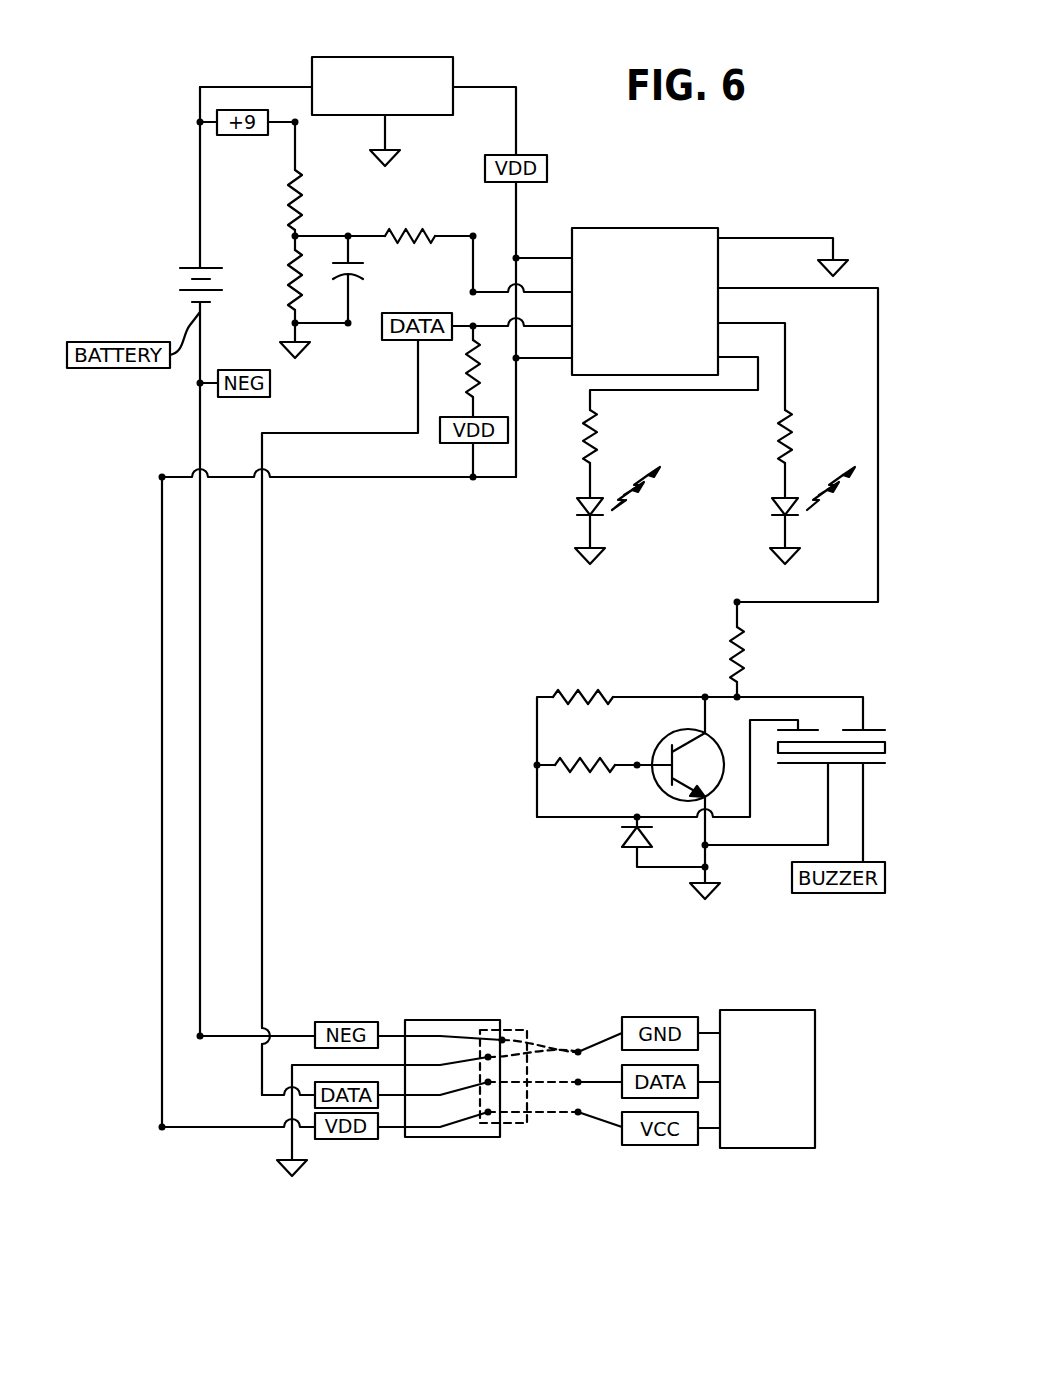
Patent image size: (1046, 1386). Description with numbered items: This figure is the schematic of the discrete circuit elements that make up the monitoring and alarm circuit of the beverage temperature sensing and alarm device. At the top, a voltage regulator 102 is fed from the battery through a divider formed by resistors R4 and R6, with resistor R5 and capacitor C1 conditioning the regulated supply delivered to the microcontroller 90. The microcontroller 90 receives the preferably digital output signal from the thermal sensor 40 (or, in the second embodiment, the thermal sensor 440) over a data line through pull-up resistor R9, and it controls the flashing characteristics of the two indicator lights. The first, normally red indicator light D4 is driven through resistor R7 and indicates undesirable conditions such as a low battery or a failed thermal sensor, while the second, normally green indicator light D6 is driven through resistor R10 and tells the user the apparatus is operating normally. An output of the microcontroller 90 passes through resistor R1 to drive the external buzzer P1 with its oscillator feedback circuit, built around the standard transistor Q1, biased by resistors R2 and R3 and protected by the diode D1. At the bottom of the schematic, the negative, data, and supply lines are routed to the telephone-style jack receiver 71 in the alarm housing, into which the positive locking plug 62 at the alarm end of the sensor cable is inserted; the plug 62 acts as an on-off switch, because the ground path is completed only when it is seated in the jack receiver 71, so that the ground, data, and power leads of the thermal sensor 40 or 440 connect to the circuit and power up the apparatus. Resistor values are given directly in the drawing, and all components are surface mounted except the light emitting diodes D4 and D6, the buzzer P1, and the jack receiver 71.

The voltage regulator 102 is at (418, 57).
The microcontroller 90 is at (645, 228).
The RJ-11 jack receiver 71 is at (405, 1020).
The RJ-11 locking plug 62 is at (527, 1030).
The thermal sensor 40 is at (799, 1056).
The thermal sensor 440 is at (770, 1010).
The resistor R1 is at (748, 657).
The resistor R2 is at (605, 690).
The resistor R3 is at (590, 772).
The resistor R4 is at (295, 222).
The resistor R5 is at (432, 232).
The resistor R6 is at (295, 300).
The resistor R7 is at (598, 440).
The resistor R9 is at (482, 372).
The resistor R10 is at (793, 420).
The capacitor C1 is at (356, 258).
The transistor Q1 is at (722, 778).
The diode D1 is at (630, 850).
The first indicator light D4 is at (578, 505).
The second indicator light D6 is at (773, 505).
The external buzzer P1 is at (863, 826).